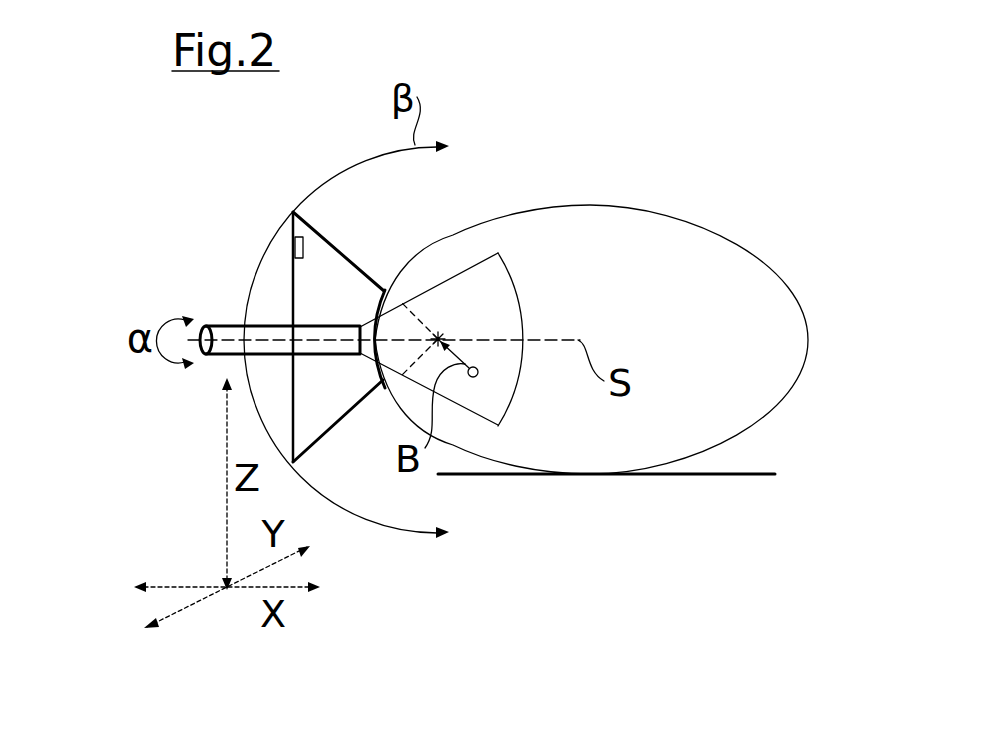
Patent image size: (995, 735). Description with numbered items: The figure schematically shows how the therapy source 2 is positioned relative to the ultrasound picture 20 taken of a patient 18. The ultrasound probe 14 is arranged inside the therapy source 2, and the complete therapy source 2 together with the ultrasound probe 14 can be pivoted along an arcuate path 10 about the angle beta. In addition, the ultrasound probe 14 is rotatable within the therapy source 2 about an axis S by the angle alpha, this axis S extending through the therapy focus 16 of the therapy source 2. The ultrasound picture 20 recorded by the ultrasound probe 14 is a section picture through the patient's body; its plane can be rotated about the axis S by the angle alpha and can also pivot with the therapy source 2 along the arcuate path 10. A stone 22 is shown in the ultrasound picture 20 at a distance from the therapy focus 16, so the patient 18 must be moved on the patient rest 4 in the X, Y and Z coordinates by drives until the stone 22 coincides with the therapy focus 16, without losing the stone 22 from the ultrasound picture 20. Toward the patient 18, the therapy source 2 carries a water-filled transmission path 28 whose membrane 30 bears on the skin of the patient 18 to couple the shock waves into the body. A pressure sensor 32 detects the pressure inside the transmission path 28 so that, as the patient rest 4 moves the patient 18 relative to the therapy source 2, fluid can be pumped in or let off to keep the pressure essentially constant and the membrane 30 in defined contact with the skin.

The therapy source 2 is at (265, 277).
The patient rest 4 is at (726, 476).
The arcuate path 10 is at (348, 167).
The ultrasound probe 14 is at (230, 328).
The therapy focus 16 is at (439, 337).
The patient 18 is at (733, 237).
The ultrasound picture 20 is at (520, 310).
The stone 22 is at (476, 366).
The transmission path 28 is at (333, 423).
The membrane 30 is at (383, 285).
The pressure sensor 32 is at (305, 248).